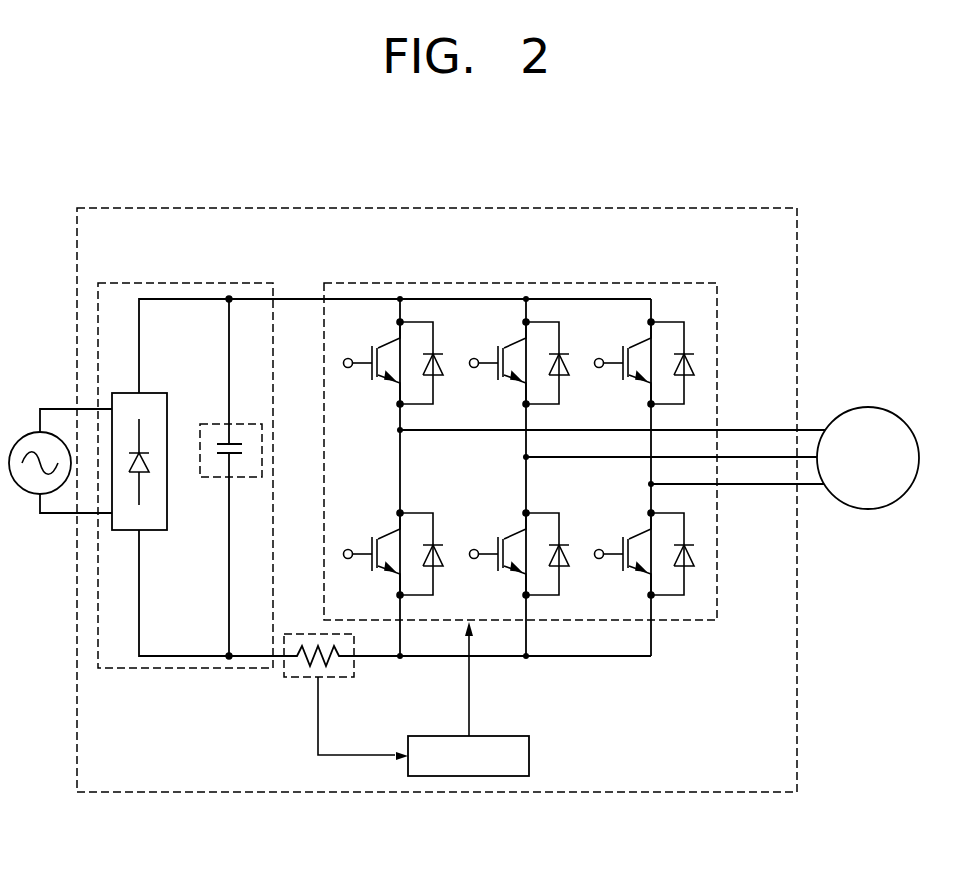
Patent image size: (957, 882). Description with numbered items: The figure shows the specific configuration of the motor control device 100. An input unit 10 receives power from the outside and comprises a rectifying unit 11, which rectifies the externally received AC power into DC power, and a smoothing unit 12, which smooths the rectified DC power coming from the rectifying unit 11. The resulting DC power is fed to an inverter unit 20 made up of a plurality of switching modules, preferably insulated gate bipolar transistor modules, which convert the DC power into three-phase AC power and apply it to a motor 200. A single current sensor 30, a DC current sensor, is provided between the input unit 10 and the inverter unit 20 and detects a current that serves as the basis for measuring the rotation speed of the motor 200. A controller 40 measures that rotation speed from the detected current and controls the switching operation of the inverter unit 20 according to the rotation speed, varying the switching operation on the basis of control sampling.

The control device 100 is at (436, 207).
The input unit 10 is at (184, 282).
The rectifying unit 11 is at (152, 392).
The smoothing unit 12 is at (247, 423).
The inverter unit 20 is at (519, 282).
The single current sensor 30 is at (299, 633).
The controller 40 is at (504, 733).
The motor 200 is at (868, 405).